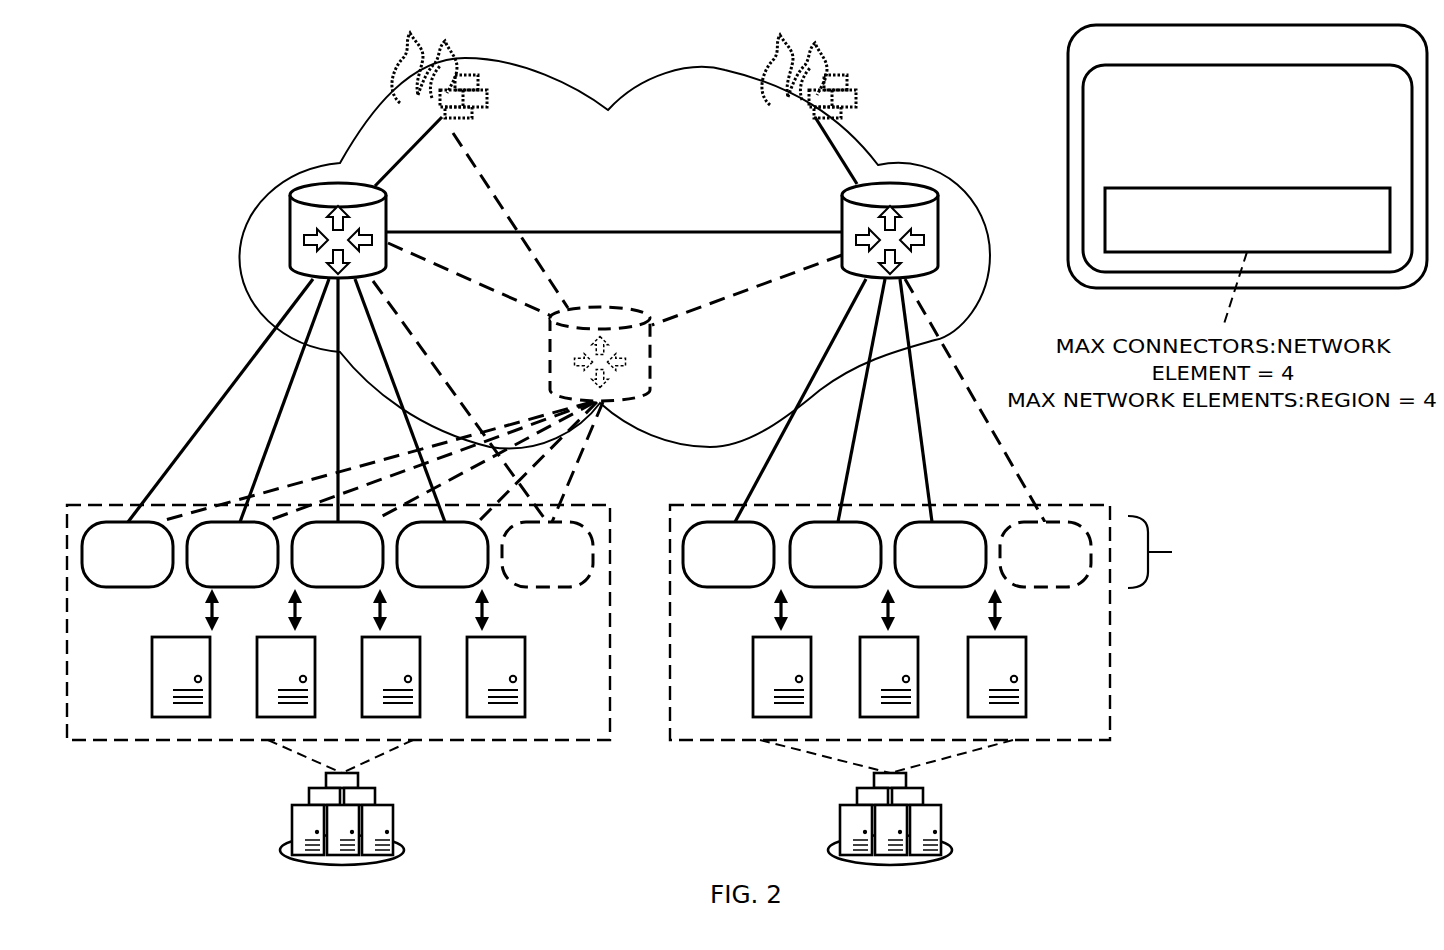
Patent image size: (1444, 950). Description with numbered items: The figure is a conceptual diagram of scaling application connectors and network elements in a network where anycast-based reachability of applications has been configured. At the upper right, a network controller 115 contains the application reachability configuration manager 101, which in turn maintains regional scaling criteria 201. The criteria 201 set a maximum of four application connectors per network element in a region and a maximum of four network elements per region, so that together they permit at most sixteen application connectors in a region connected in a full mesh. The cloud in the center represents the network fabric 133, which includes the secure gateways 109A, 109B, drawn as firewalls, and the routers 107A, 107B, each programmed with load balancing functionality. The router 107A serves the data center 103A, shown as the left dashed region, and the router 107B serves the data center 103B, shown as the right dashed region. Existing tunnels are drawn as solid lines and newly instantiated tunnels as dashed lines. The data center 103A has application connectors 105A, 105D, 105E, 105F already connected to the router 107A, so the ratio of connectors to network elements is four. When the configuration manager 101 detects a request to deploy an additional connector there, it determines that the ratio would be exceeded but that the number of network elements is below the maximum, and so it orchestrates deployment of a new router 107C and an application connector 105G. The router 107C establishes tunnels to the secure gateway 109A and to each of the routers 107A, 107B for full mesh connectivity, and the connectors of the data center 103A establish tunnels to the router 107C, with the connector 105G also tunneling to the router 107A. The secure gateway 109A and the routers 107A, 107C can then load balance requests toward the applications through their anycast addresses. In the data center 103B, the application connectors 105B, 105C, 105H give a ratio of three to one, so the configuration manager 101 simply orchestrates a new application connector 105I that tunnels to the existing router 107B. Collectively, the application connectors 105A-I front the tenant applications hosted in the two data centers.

The application reachability configuration manager 101 is at (1247, 168).
The data center 103A is at (283, 854).
The data center 103B is at (834, 854).
The application connector 105A is at (127, 554).
The application connector 105B is at (728, 554).
The application connector 105C is at (835, 554).
The application connector 105D is at (232, 554).
The application connector 105E is at (337, 554).
The application connector 105F is at (442, 554).
The application connector 105G is at (547, 554).
The application connector 105H is at (940, 554).
The application connector 105I is at (1045, 554).
The application connectors 105A-I is at (1234, 553).
The router 107A is at (288, 210).
The router 107B is at (838, 199).
The router 107C is at (652, 384).
The secure gateway 109A is at (483, 72).
The secure gateway 109B is at (853, 87).
The network controller 115 is at (1247, 156).
The network fabric 133 is at (988, 217).
The regional scaling criteria 201 is at (1247, 220).